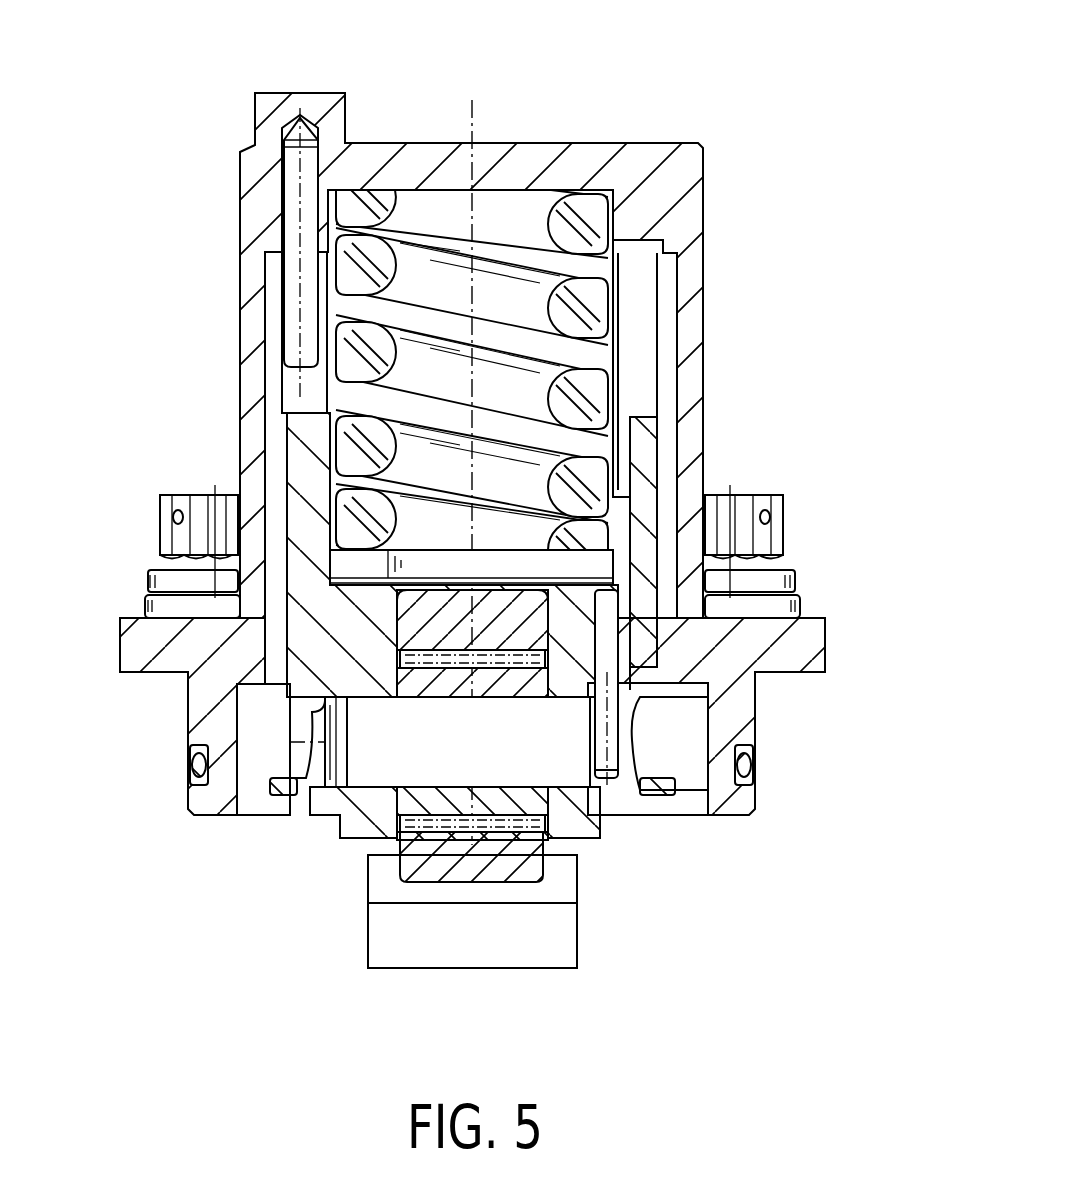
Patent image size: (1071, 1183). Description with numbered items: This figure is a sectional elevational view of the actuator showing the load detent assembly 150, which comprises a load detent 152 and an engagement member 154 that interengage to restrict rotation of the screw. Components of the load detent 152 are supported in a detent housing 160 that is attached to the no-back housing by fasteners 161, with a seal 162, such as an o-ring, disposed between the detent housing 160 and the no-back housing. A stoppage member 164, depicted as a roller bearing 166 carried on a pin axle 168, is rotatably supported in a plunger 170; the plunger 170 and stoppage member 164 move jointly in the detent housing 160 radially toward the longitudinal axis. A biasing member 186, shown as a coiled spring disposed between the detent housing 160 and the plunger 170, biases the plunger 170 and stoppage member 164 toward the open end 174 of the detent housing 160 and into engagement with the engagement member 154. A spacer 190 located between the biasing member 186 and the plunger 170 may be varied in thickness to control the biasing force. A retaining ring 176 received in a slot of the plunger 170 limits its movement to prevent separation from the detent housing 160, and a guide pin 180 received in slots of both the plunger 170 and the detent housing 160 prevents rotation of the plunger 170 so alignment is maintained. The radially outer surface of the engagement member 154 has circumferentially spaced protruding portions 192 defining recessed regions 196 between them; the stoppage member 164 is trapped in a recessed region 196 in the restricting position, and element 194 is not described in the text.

The load detent assembly 150 is at (786, 99).
The load detent 152 is at (798, 468).
The engagement member 154 is at (398, 967).
The detent housing 160 is at (708, 345).
The fasteners 161 is at (170, 527).
The seal 162 is at (196, 765).
The stoppage member 164 is at (546, 680).
The roller bearing 166 is at (535, 882).
The pin axle 168 is at (565, 768).
The plunger 170 is at (297, 619).
The open end 174 is at (386, 854).
The retaining ring 176 is at (290, 797).
The guide pin 180 is at (288, 230).
The biasing member 186 is at (530, 290).
The spacer 190 is at (597, 567).
The protruding portions 192 is at (491, 887).
The upper block 194 is at (565, 885).
The recessed regions 196 is at (548, 955).